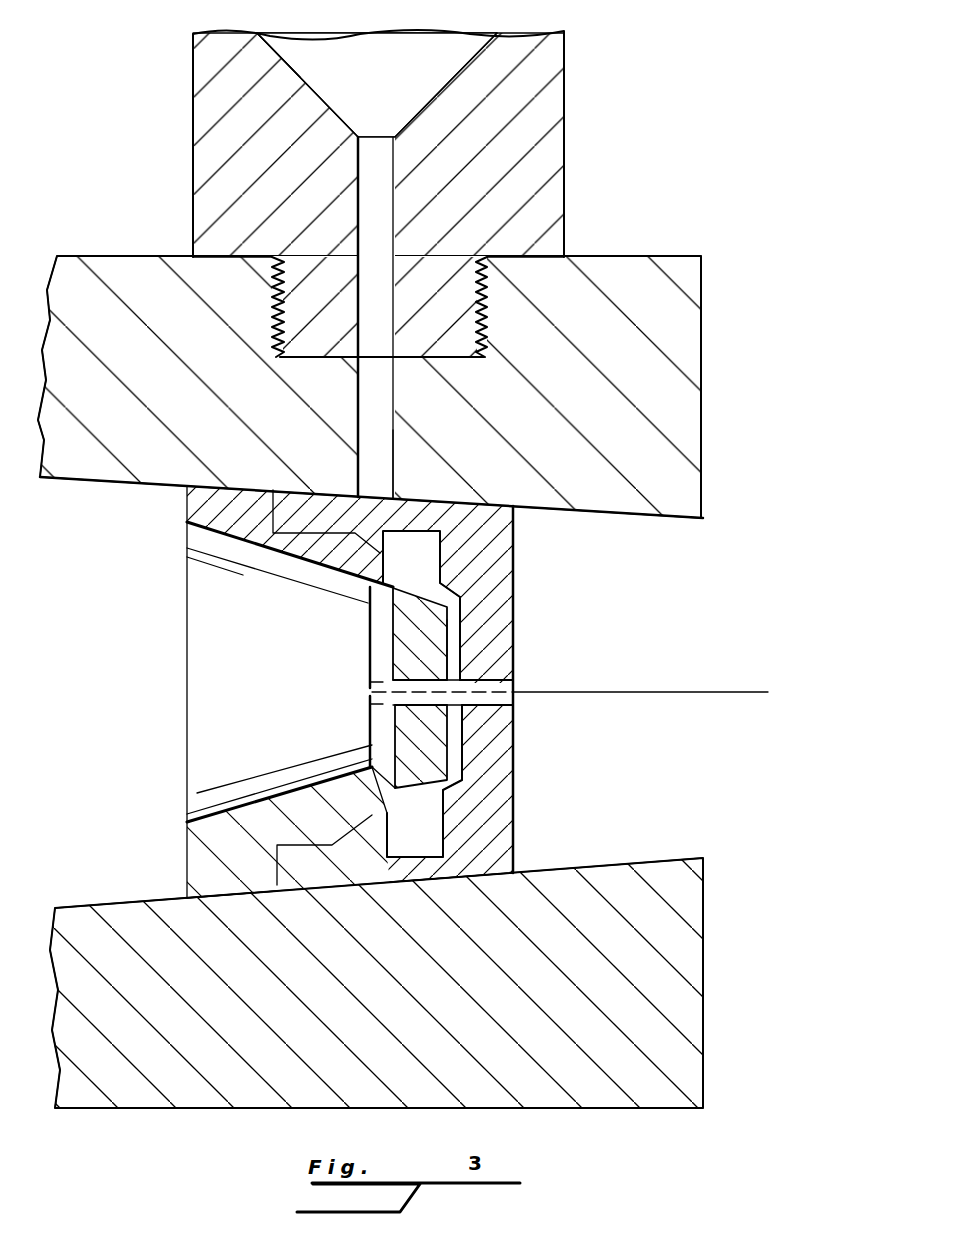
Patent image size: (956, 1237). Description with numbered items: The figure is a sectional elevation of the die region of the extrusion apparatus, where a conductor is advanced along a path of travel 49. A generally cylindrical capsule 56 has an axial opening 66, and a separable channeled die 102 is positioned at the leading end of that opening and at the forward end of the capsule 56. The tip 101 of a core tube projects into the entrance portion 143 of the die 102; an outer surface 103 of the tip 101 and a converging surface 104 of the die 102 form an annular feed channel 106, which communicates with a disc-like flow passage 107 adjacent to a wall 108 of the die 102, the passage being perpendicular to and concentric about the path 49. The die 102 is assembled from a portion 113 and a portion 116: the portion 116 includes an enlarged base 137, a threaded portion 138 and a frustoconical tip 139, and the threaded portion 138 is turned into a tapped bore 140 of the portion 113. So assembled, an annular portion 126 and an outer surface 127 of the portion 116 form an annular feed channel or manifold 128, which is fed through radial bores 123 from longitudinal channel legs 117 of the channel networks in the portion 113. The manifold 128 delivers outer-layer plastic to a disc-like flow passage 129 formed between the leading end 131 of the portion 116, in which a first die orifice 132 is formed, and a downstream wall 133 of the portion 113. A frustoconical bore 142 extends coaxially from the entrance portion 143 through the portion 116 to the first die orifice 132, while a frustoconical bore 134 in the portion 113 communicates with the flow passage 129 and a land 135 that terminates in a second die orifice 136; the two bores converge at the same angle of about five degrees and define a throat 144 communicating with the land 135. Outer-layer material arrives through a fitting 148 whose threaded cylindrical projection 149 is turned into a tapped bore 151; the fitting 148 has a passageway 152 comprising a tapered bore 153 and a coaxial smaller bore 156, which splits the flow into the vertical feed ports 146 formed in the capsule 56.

The path of travel 49 is at (719, 692).
The capsule 56 is at (126, 254).
The axial opening 66 is at (118, 485).
The tip 101 is at (250, 695).
The die 102 is at (349, 898).
The outer surface 103 is at (216, 553).
The converging surface 104 is at (215, 828).
The annular feed channel 106 is at (292, 577).
The flow passage 107 is at (378, 637).
The wall 108 is at (437, 606).
The portion 113 is at (500, 880).
The portion 116 is at (225, 898).
The longitudinal channel legs 117 is at (372, 505).
The radial bore 123 is at (418, 527).
The annular portion 126 is at (430, 567).
The outer surface 127 is at (398, 566).
The annular feed channel 128 is at (446, 590).
The flow passage 129 is at (492, 620).
The leading end 131 is at (452, 634).
The first die orifice 132 is at (482, 652).
The downstream wall 133 is at (504, 747).
The frustoconical bore 134 is at (470, 672).
The land 135 is at (488, 706).
The second die orifice 136 is at (474, 690).
The enlarged base 137 is at (195, 897).
The threaded portion 138 is at (297, 862).
The frustoconical tip 139 is at (513, 846).
The tapped bore 140 is at (306, 487).
The frustoconical bore 142 is at (420, 704).
The entrance portion 143 is at (400, 708).
The throat 144 is at (512, 772).
The vertical feed port 146 is at (392, 414).
The fitting 148 is at (540, 105).
The threaded cylindrical projection 149 is at (456, 296).
The tapped bore 151 is at (280, 312).
The passageway 152 is at (397, 82).
The tapered bore 153 is at (288, 55).
The bore 156 is at (392, 198).